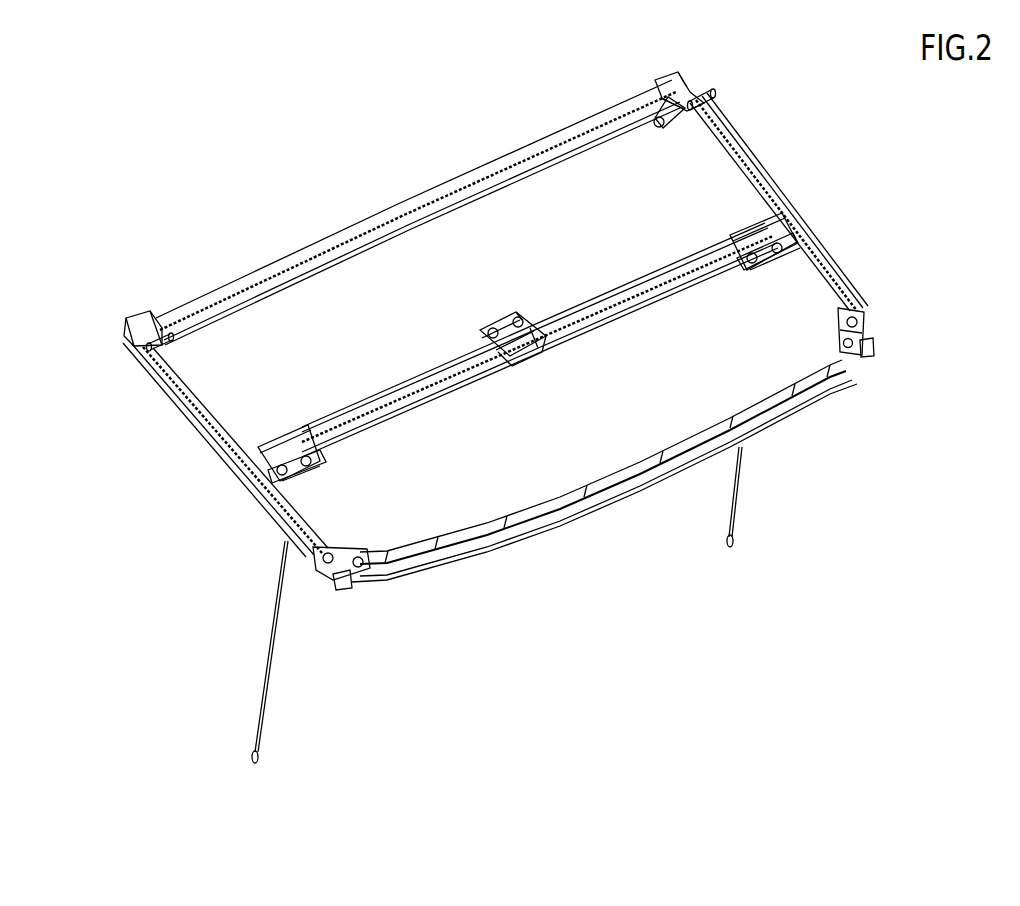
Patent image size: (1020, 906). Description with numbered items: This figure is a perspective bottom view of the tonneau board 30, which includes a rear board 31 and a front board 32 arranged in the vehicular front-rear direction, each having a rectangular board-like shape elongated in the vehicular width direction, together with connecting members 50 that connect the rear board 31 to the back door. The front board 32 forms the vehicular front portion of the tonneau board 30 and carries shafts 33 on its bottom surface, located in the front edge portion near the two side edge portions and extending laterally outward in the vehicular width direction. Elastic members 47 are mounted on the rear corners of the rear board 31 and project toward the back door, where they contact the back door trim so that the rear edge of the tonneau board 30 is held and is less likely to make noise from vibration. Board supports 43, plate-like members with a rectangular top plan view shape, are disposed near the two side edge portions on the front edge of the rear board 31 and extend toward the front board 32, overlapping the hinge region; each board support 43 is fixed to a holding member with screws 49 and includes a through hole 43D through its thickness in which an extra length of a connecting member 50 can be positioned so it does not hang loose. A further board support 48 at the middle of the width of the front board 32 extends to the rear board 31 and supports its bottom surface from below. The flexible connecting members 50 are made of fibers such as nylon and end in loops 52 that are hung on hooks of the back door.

The tonneau board 30 is at (495, 314).
The rear board 31 is at (485, 512).
The front board 32 is at (393, 272).
The shafts 33 is at (146, 344).
The board support 43 is at (509, 334).
The through hole 43D is at (287, 468).
The elastic members 47 is at (343, 590).
The board support 48 is at (508, 318).
The screws 49 is at (306, 468).
The connecting members 50 is at (495, 621).
The loops 52 is at (257, 762).